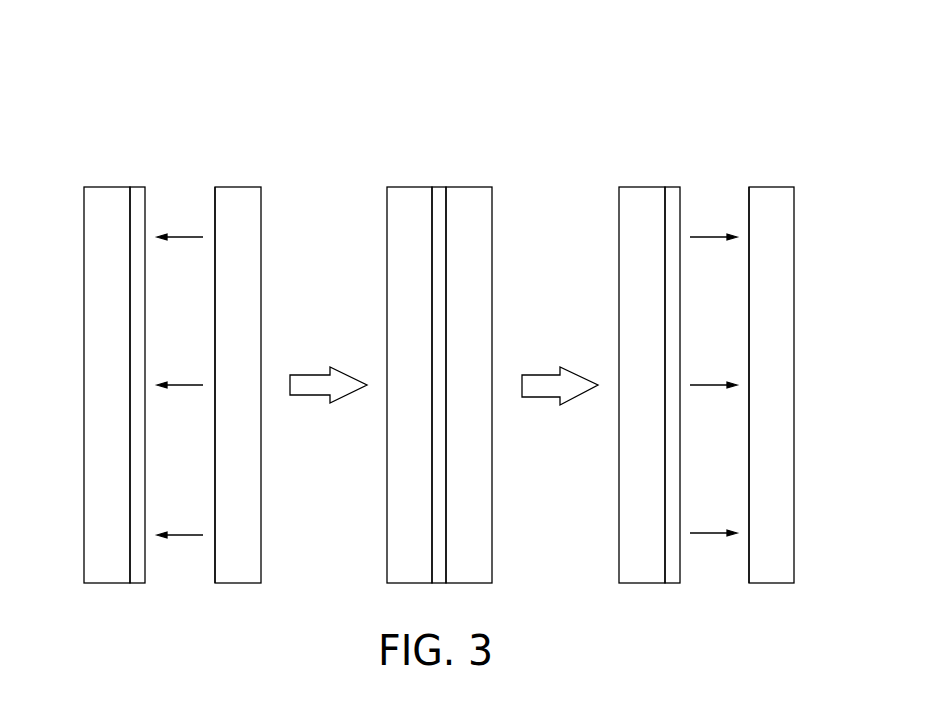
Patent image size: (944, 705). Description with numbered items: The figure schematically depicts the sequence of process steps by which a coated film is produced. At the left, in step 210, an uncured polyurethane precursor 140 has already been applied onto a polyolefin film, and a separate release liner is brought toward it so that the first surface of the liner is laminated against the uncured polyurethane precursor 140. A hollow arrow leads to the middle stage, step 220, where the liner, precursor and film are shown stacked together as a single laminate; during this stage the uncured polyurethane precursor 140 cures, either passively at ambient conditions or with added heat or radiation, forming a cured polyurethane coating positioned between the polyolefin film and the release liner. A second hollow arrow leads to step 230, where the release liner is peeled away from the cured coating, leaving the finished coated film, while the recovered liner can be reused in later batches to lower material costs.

The uncured polyurethane precursor 140 is at (137, 187).
The step 210 is at (150, 328).
The step 220 is at (425, 298).
The step 230 is at (711, 329).